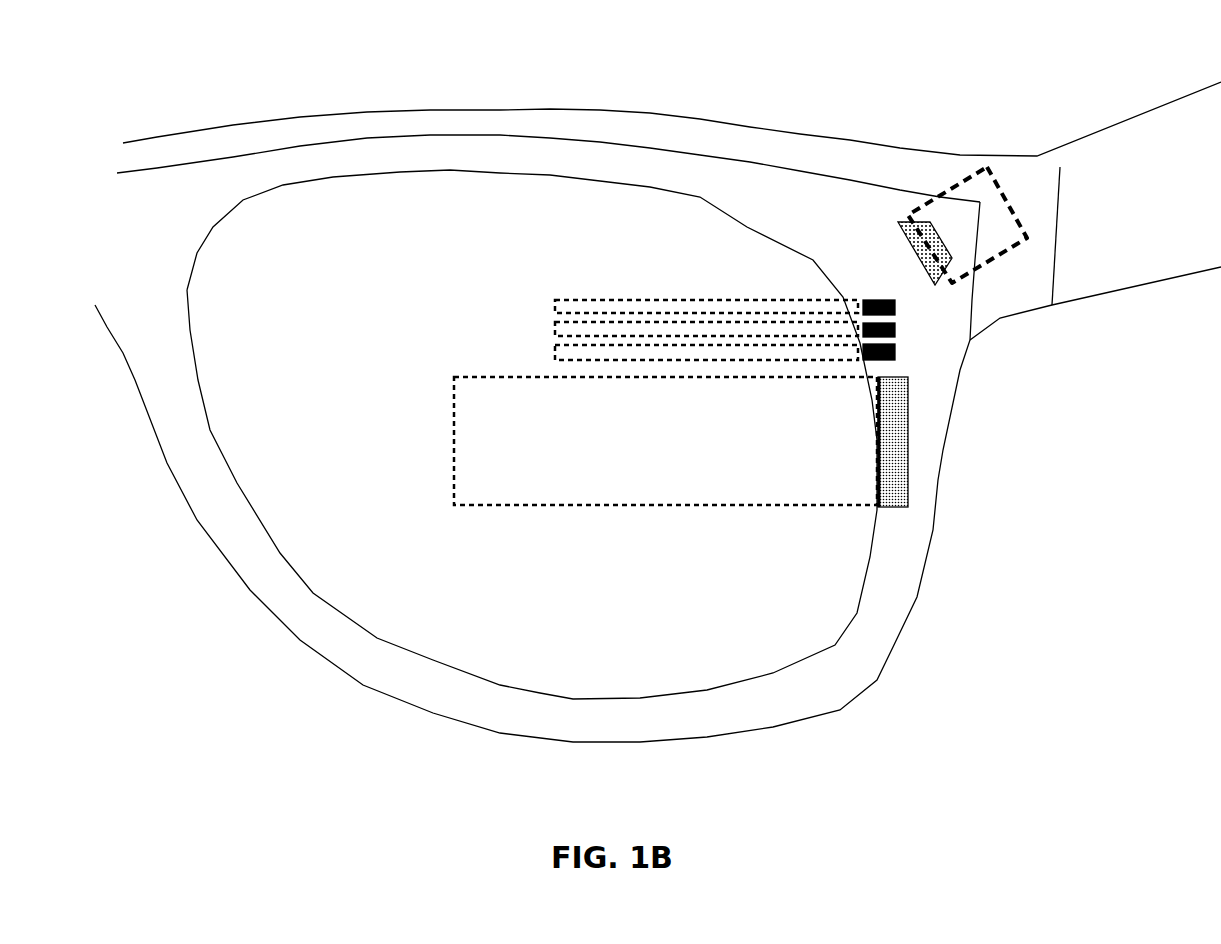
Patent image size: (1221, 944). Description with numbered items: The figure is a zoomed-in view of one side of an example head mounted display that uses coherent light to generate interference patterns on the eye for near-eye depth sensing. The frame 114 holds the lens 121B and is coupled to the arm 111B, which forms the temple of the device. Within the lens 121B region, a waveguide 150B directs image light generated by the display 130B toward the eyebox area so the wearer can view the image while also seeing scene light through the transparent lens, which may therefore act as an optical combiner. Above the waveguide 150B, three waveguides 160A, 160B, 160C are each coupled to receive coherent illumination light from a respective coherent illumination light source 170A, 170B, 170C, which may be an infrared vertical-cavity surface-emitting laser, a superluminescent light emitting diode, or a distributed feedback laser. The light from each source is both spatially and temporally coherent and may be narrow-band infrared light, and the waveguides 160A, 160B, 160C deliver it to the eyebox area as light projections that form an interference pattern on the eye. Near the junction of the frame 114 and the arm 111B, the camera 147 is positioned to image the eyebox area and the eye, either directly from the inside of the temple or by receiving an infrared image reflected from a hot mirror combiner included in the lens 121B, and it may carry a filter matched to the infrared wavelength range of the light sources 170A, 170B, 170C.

The frame 114 is at (812, 225).
The arm 111B is at (1122, 215).
The lens 121B is at (603, 663).
The camera 147 is at (997, 180).
The waveguide 160A is at (555, 302).
The waveguide 160B is at (553, 327).
The waveguide 160C is at (553, 352).
The coherent illumination light source 170A is at (898, 311).
The coherent illumination light source 170B is at (898, 334).
The coherent illumination light source 170C is at (898, 357).
The display 130B is at (910, 450).
The waveguide 150B is at (850, 505).